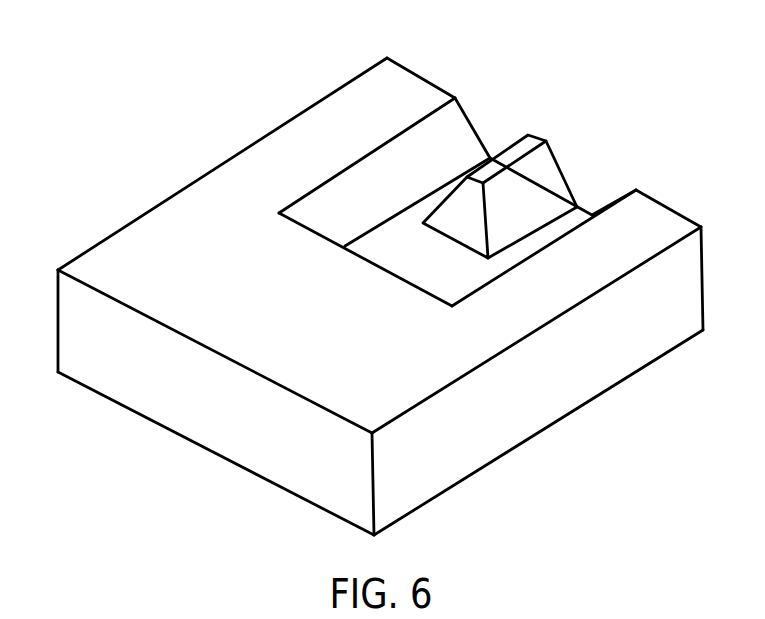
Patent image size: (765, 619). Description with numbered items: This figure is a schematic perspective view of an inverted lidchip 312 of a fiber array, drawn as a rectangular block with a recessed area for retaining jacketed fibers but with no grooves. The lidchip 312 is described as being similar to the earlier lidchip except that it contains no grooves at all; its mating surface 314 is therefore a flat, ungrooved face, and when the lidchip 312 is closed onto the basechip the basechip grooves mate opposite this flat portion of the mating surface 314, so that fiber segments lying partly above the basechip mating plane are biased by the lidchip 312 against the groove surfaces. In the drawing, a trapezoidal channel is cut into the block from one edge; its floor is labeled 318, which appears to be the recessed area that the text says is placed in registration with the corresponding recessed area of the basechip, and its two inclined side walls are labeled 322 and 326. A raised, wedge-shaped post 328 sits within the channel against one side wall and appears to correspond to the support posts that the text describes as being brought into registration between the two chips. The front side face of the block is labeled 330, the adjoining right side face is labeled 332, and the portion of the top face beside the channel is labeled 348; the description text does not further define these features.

The lidchip 312 is at (380, 276).
The mating surface 314 is at (388, 64).
The groove floor surface 318 is at (402, 267).
The first sloped groove sidewall 322 is at (457, 117).
The second sloped groove sidewall 326 is at (577, 218).
The wedge 328 is at (557, 167).
The front side surface 330 is at (265, 455).
The right side surface 332 is at (625, 357).
The top surface portion adjacent groove 348 is at (602, 192).